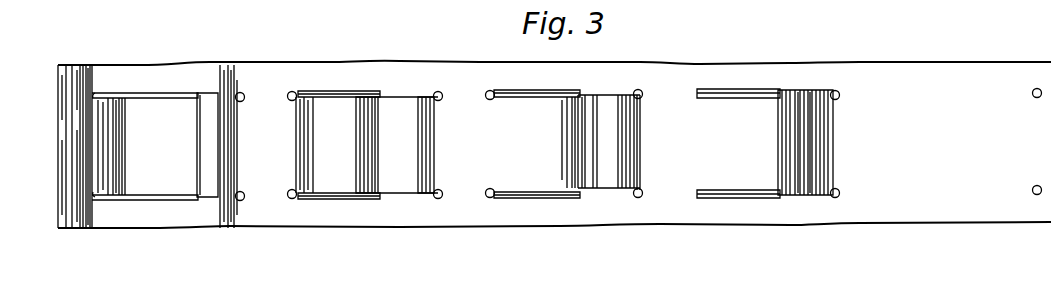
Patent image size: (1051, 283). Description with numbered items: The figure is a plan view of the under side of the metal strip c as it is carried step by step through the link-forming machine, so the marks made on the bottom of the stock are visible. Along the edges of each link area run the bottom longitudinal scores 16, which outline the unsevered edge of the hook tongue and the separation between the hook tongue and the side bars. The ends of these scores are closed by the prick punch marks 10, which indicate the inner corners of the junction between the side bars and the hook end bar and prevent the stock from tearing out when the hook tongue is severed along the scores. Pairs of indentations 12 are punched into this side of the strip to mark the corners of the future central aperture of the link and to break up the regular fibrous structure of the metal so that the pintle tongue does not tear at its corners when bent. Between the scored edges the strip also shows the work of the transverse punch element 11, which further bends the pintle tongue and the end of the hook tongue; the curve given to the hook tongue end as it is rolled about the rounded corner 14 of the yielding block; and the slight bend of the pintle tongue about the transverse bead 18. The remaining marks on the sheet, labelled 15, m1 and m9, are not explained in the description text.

The metal strip c is at (948, 70).
The punch marks 10 is at (94, 91).
The transverse punch element 11 is at (608, 190).
The indentations 12 is at (241, 93).
The rounded corner 14 is at (833, 145).
The slide member 15 is at (808, 194).
The longitudinal scores 16 is at (330, 91).
The transverse bead 18 is at (641, 136).
The slide plate m1 is at (112, 135).
The slide plate m9 is at (205, 196).